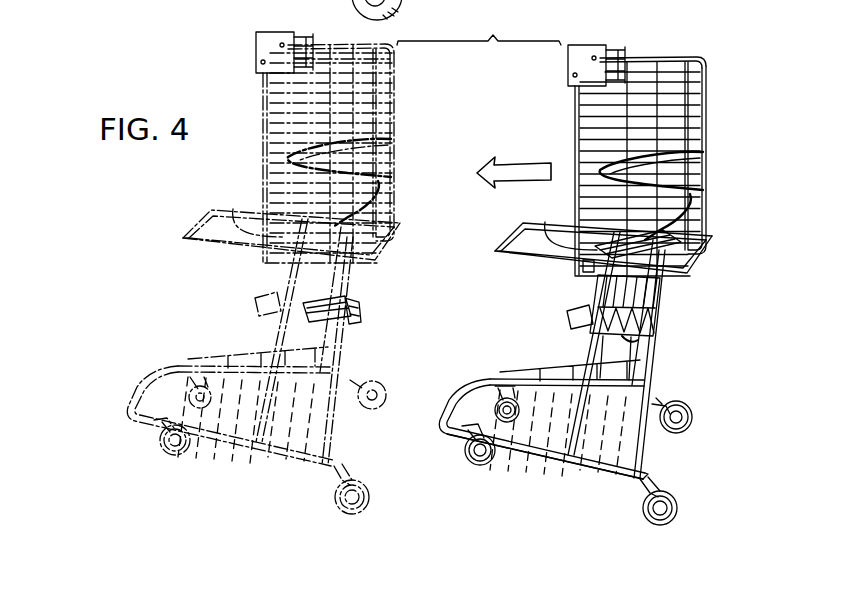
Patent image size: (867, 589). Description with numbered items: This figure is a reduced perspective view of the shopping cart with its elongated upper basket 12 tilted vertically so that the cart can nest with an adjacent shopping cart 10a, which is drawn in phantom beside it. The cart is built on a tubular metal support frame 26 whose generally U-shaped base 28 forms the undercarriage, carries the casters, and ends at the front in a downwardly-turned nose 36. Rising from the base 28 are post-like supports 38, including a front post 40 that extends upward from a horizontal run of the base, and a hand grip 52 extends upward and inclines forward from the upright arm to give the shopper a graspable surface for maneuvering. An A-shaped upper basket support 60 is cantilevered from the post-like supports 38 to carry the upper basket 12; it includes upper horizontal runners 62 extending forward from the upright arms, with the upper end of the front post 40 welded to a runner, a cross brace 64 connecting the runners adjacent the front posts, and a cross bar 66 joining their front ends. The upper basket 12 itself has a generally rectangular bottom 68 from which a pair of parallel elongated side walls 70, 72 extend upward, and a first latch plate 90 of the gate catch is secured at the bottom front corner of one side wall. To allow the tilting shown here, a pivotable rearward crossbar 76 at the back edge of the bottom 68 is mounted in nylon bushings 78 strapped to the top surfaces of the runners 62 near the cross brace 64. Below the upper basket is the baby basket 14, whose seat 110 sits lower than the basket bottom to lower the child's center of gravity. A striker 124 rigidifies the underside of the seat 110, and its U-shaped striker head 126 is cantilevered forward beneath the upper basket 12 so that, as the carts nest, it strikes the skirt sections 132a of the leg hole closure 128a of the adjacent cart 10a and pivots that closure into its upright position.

The adjacent shopping cart 10a is at (285, 262).
The upper basket 12 is at (668, 58).
The baby basket 14 is at (642, 296).
The support frame 26 is at (562, 456).
The base 28 is at (602, 467).
The nose 36 is at (438, 408).
The post-like supports 38 is at (653, 440).
The front post 40 is at (550, 400).
The hand grip 52 is at (686, 164).
The upper basket support 60 is at (494, 251).
The upper horizontal runners 62 is at (512, 262).
The cross brace 64 is at (650, 240).
The cross bar 66 is at (514, 236).
The bottom 68 is at (577, 118).
The side wall 70 is at (692, 120).
The side wall 72 is at (706, 82).
The rearward crossbar 76 is at (548, 216).
The bushings 78 is at (586, 272).
The first latch plate 90 is at (590, 44).
The seat 110 is at (650, 330).
The striker 124 is at (626, 336).
The striker head 126 is at (567, 317).
The leg hole closure 128a is at (335, 297).
The skirt sections 132a is at (358, 308).